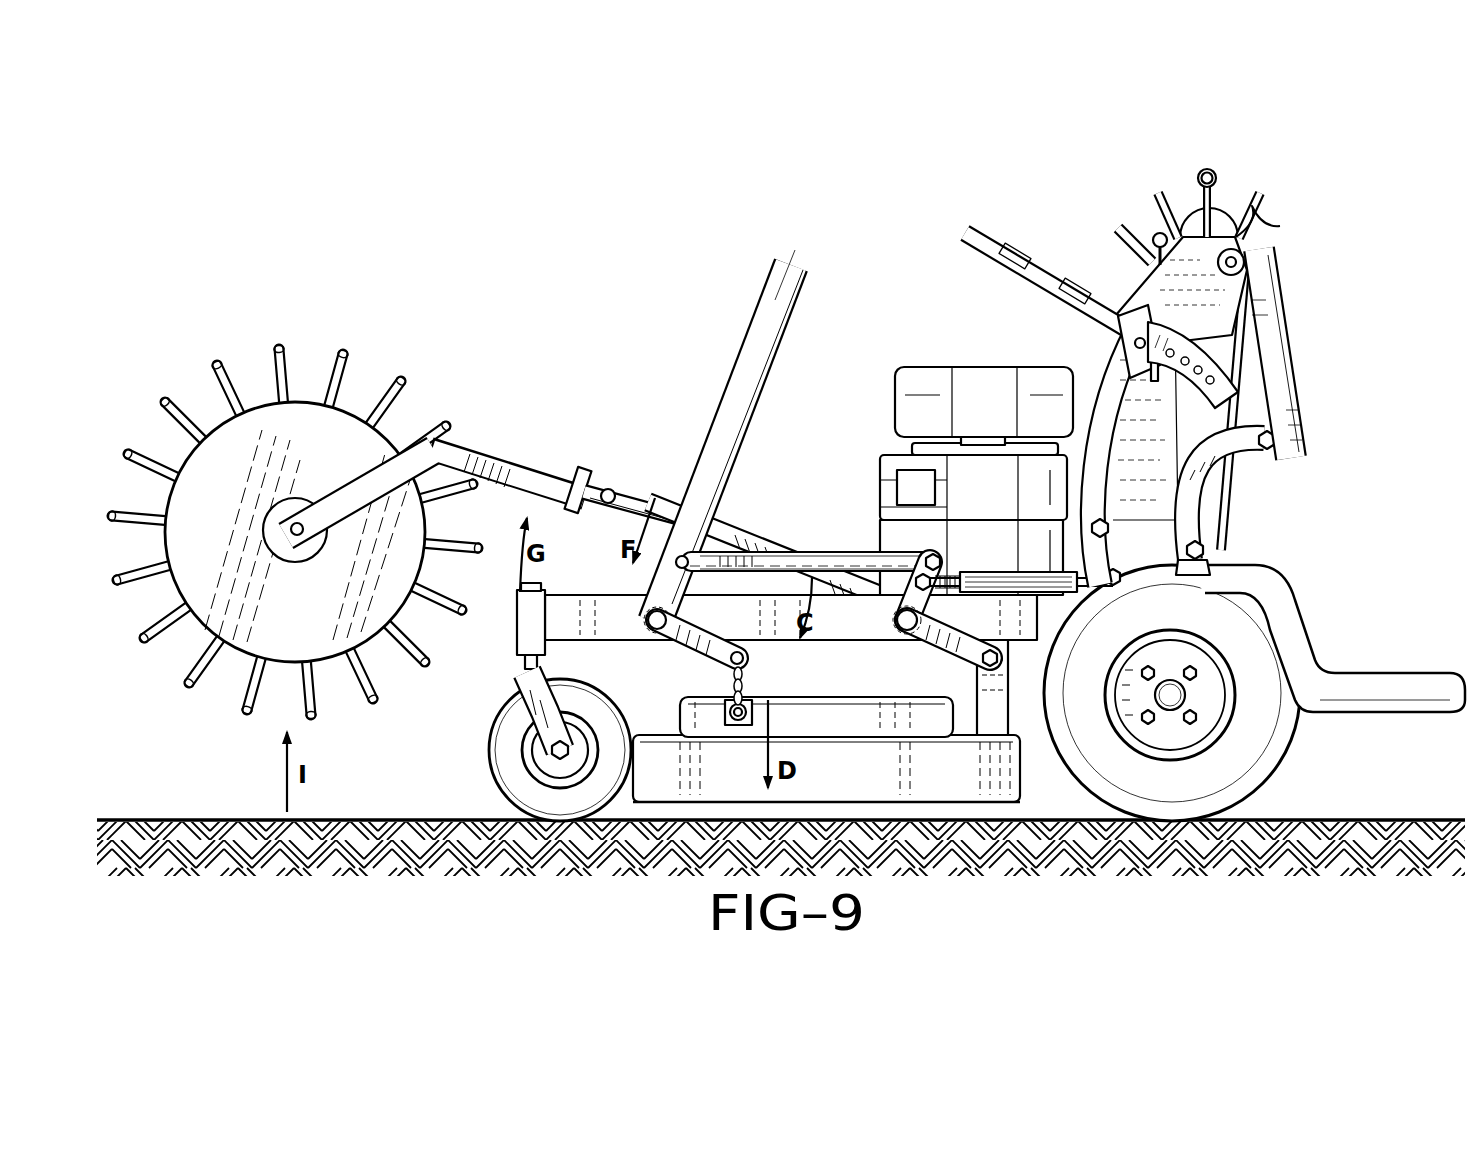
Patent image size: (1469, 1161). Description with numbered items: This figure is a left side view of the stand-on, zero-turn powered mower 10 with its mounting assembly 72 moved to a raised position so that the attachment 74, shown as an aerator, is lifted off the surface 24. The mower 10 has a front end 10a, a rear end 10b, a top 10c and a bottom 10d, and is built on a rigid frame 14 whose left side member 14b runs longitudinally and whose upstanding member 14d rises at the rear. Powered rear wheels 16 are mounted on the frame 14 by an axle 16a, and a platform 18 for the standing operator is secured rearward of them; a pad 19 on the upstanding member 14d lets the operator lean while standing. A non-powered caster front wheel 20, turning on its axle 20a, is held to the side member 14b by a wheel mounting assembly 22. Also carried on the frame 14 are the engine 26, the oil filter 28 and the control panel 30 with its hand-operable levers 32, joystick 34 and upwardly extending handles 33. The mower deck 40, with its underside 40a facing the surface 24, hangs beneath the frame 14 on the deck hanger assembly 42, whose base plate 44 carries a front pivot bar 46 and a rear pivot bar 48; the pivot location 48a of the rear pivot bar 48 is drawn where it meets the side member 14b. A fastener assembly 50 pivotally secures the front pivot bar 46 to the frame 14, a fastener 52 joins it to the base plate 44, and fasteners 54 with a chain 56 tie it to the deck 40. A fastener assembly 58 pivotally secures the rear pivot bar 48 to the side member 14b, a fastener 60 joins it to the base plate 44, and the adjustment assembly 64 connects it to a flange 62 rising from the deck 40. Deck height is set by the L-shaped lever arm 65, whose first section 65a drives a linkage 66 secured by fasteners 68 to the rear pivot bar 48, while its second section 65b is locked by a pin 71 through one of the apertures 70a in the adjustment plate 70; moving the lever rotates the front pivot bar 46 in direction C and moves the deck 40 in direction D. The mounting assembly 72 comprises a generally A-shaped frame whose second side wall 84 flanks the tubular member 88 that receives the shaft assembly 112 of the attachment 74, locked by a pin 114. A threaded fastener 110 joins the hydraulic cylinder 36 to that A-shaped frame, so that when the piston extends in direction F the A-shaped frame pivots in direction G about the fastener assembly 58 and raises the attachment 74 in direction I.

The powered mower 10 is at (615, 264).
The front end 10a is at (468, 743).
The rear end 10b is at (1411, 414).
The top 10c is at (838, 231).
The bottom 10d is at (1048, 797).
The rigid frame 14 is at (831, 637).
The left side member 14b is at (590, 605).
The upstanding member 14d is at (1157, 497).
The rear wheels 16 is at (1276, 770).
The axle 16a is at (1177, 695).
The platform 18 is at (1377, 672).
The pad 19 is at (1306, 357).
The front wheels 20 is at (512, 789).
The axle 20a is at (558, 758).
The wheel mounting assembly 22 is at (506, 633).
The surface 24 is at (1388, 820).
The engine 26 is at (1033, 440).
The oil filter 28 is at (930, 382).
The control panel 30 is at (1176, 186).
The hand-operable levers 32 is at (1118, 226).
The handles 33 is at (1262, 226).
The joystick 34 is at (1154, 234).
The cylinder 36 is at (750, 311).
The mower deck 40 is at (976, 802).
The underside 40a is at (923, 806).
The deck hanger assembly 42 is at (840, 541).
The base plate 44 is at (820, 556).
The front pivot bar 46 is at (675, 653).
The rear pivot bar 48 is at (945, 657).
The rear link pivot 48a is at (898, 603).
The fastener assembly 50 is at (650, 638).
The fastener 52 is at (690, 575).
The fasteners 54 is at (743, 664).
The chain 56 is at (735, 678).
The fastener assembly 58 is at (905, 638).
The fastener 60 is at (898, 490).
The flange 62 is at (1003, 685).
The adjustment assembly 64 is at (1003, 653).
The adjustable lever arm 65 is at (1122, 434).
The first section 65a is at (1233, 410).
The second section 65b is at (990, 254).
The linkage 66 is at (975, 571).
The fasteners 68 is at (913, 577).
The adjustment plate 70 is at (1187, 360).
The apertures 70a is at (1224, 343).
The pin 71 is at (1274, 440).
The mounting assembly 72 is at (768, 524).
The attachment 74 is at (203, 402).
The second side wall 84 is at (722, 530).
The tubular member 88 is at (626, 482).
The threaded fastener 110 is at (684, 509).
The shaft assembly 112 is at (471, 440).
The pin 114 is at (605, 474).